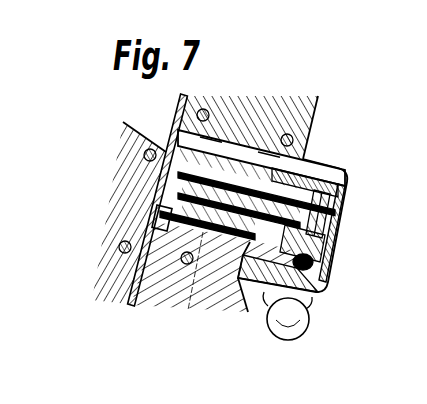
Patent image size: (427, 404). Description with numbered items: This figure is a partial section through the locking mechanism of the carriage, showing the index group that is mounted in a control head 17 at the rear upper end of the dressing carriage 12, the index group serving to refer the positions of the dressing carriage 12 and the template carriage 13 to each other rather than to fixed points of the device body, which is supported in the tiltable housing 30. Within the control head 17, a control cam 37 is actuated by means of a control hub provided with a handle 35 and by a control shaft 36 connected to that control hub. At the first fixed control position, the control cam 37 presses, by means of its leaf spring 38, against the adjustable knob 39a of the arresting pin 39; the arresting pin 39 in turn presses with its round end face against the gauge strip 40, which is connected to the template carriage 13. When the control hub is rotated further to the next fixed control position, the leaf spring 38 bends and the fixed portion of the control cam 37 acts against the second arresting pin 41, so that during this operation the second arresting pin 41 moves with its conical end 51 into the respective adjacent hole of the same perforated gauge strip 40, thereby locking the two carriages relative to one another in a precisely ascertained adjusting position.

The dressing carriage 12 is at (200, 302).
The template carriage 13 is at (180, 136).
The control head 17 is at (305, 172).
The housing 30 is at (302, 125).
The handle 35 is at (305, 320).
The control shaft 36 is at (318, 270).
The control cam 37 is at (325, 243).
The leaf spring 38 is at (332, 208).
The arresting pin 39 is at (182, 162).
The adjustable knob 39a is at (340, 182).
The gauge strip 40 is at (133, 270).
The second arresting pin 41 is at (160, 218).
The conical end 51 is at (184, 178).